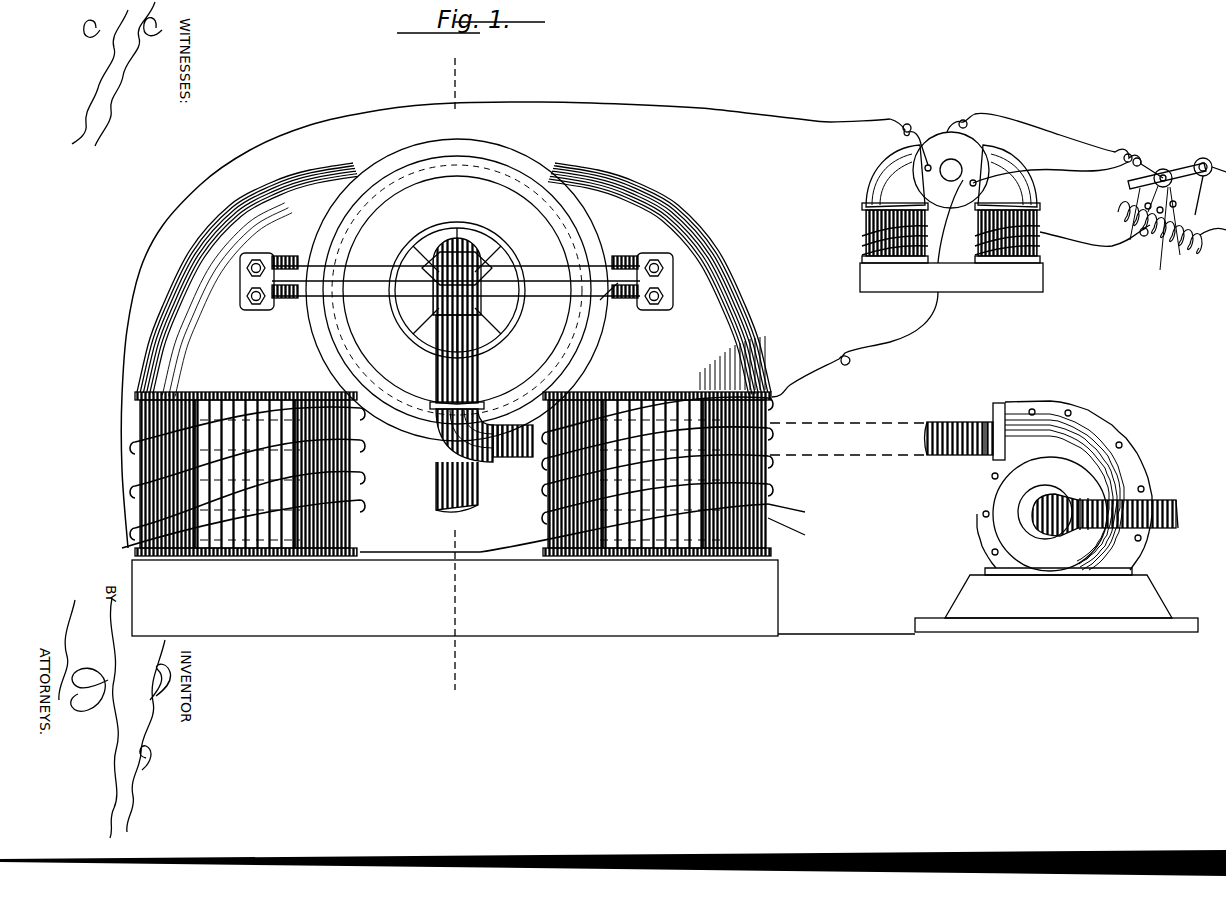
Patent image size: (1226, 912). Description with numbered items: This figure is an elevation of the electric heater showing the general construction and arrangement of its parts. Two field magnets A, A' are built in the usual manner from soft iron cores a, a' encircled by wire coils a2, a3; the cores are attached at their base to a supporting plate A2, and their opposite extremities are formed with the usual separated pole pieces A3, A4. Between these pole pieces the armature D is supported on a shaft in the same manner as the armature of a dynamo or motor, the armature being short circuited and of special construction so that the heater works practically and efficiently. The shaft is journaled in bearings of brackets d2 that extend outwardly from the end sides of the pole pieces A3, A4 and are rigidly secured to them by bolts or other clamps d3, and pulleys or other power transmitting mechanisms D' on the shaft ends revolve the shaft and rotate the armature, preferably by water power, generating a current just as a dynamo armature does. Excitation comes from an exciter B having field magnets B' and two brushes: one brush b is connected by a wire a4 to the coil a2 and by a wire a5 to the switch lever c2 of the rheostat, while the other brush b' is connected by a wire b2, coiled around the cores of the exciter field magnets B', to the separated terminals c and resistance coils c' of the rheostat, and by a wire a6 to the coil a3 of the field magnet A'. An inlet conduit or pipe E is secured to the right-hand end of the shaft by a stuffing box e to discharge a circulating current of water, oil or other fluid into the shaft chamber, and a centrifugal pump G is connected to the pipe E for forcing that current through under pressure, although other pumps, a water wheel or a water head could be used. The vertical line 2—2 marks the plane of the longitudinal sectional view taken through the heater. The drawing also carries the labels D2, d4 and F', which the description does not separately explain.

The section line 2— 2 is at (455, 372).
The field magnet A is at (222, 474).
The field magnet A' is at (670, 474).
The supporting plate A2 is at (523, 598).
The pole piece A3 is at (345, 170).
The pole piece A4 is at (612, 190).
The soft iron core a is at (430, 479).
The soft iron core a' is at (681, 461).
The wire coil a2 is at (135, 540).
The wire coil a3 is at (796, 533).
The wire a4 is at (715, 106).
The wire a5 is at (958, 126).
The wire a6 is at (893, 347).
The exciter B is at (951, 151).
The field magnets of the exciter B' is at (954, 247).
The brush b is at (897, 142).
The brush b' is at (1033, 208).
The wire b2 is at (1098, 248).
The terminals c is at (1163, 203).
The resistance coils c' is at (1190, 228).
The switch lever c2 is at (1206, 158).
The armature D is at (457, 281).
The pulleys D' is at (457, 267).
The flywheel rim D2 is at (507, 180).
The brackets d2 is at (318, 268).
The bolts or clamps d3 is at (240, 296).
The rod connection d4 is at (598, 262).
The inlet conduit or pipe E is at (480, 368).
The stuffing box e is at (470, 256).
The discharge pipe F' is at (441, 487).
The centrifugal pump G is at (1082, 418).